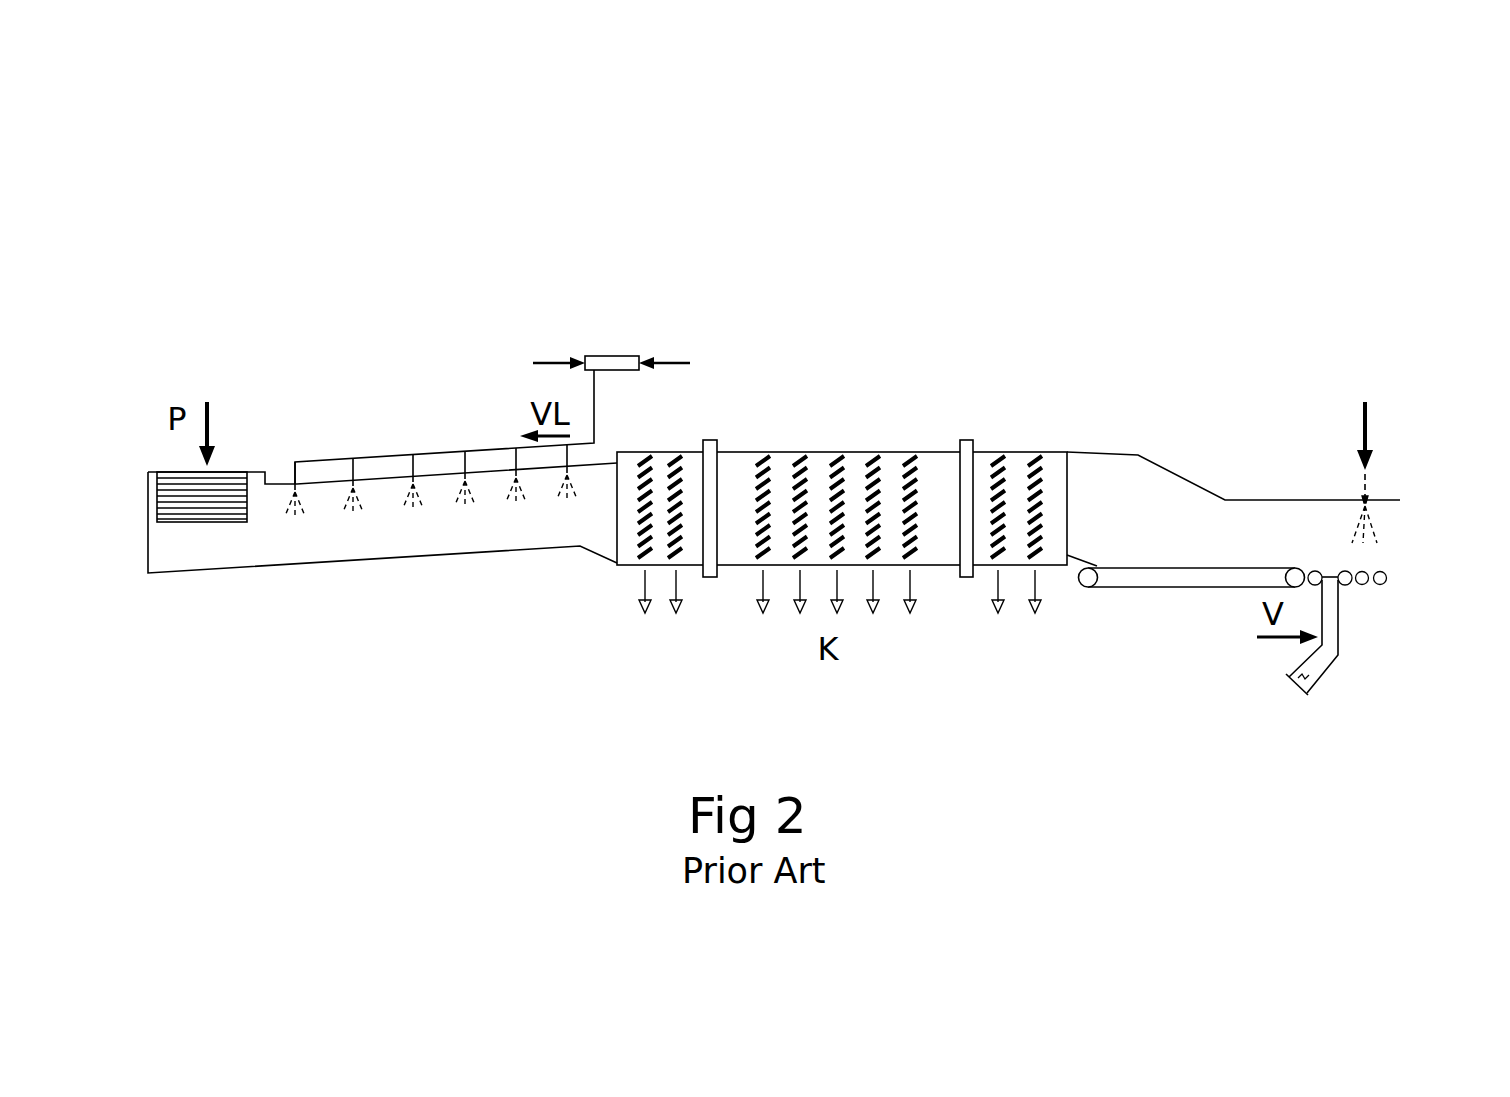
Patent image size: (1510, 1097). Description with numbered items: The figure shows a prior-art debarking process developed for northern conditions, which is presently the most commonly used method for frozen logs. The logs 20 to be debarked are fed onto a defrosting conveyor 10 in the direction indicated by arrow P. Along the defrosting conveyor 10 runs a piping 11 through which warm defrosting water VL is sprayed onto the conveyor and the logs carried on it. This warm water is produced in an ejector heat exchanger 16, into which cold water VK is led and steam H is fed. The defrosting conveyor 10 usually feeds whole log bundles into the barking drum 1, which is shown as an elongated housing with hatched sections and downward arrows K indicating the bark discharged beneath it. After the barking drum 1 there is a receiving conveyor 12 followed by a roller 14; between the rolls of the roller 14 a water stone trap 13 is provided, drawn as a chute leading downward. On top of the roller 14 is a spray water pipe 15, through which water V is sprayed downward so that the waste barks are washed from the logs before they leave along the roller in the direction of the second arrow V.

The barking drum 1 is at (745, 463).
The defrosting conveyor 10 is at (385, 508).
The piping 11 is at (322, 455).
The receiving conveyor 12 is at (1158, 580).
The water stone trap 13 is at (1327, 653).
The roller 14 is at (1362, 587).
The spray water pipe 15 is at (1368, 497).
The ejector heat exchanger 16 is at (608, 357).
The logs 20 is at (232, 480).